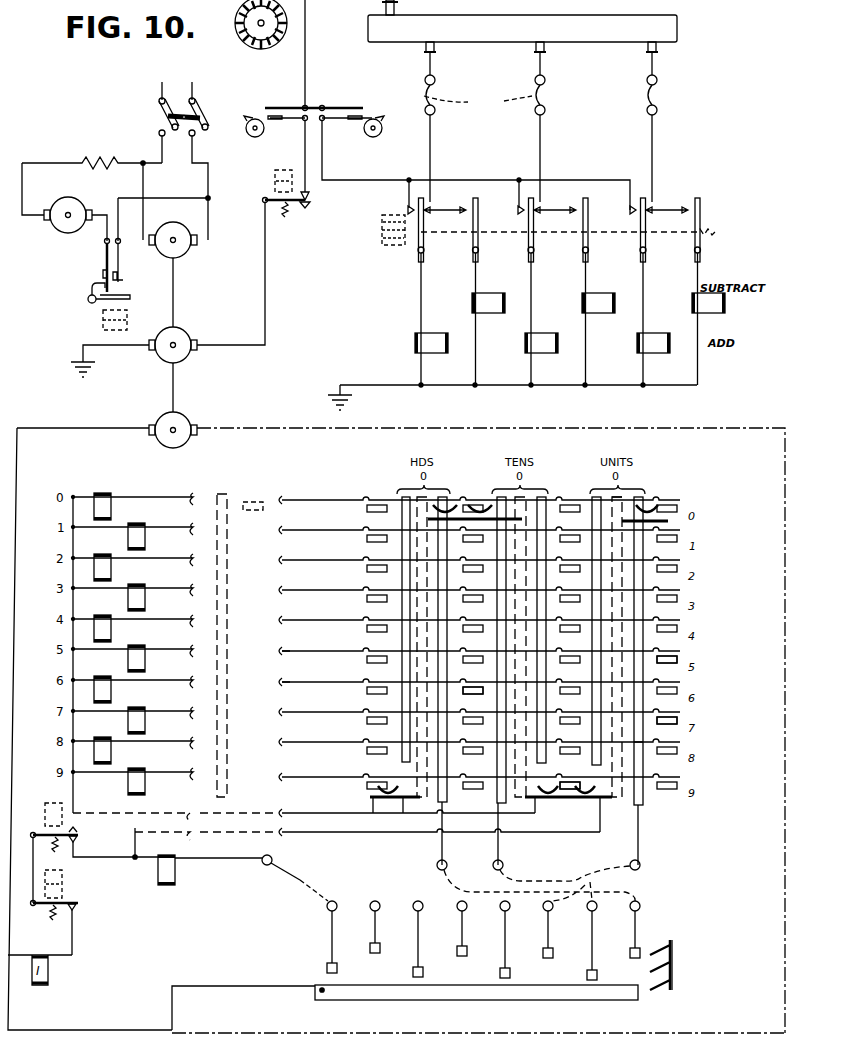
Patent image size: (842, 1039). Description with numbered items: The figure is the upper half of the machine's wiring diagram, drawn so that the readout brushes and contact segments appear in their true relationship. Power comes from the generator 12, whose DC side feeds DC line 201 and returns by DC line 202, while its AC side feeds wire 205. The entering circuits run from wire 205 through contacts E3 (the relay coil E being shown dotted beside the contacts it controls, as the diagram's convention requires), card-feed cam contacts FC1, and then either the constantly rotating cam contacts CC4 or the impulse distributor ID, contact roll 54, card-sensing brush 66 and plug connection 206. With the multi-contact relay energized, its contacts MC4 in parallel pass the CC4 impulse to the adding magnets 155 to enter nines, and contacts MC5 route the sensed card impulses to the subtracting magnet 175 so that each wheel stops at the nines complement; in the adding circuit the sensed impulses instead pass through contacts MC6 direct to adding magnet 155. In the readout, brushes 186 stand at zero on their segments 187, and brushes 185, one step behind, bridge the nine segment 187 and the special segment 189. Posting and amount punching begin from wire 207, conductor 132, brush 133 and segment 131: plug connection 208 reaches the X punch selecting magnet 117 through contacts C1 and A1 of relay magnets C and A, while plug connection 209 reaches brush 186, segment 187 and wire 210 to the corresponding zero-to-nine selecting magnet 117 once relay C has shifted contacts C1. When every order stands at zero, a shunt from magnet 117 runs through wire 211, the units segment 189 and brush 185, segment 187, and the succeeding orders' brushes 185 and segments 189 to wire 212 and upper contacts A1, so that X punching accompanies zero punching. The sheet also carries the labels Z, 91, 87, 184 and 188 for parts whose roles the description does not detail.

The impulse distributor ID is at (250, 40).
The cam contacts FC1 is at (284, 108).
The cam contacts CC4 is at (346, 108).
The contact roll 54 is at (522, 21).
The brush 66 is at (650, 50).
The plug connection 206 is at (478, 104).
The relay contacts MC4 is at (417, 195).
The relay contacts MC6 is at (428, 205).
The relay contacts MC5 is at (472, 200).
The relay E is at (273, 178).
The relay contacts E3 is at (312, 198).
The wire 205 is at (252, 274).
The motor Z is at (72, 198).
The switch 91 is at (108, 260).
The relay coil 87 is at (130, 320).
The AC side of generator AC is at (140, 352).
The generator 12 is at (158, 410).
The DC side of generator DC is at (179, 433).
The subtracting magnet 175 is at (600, 306).
The adding magnet 155 is at (535, 343).
The DC line 202 is at (28, 985).
The DC line 201 is at (785, 1018).
The punch selecting magnet 117 is at (167, 886).
The brush 186 is at (655, 508).
The commutator bar 184 is at (630, 497).
The wire 210 is at (326, 645).
The contact segment 187 is at (565, 785).
The conductor bar 188 is at (698, 742).
The brush 185 is at (590, 798).
The segment 189 is at (640, 800).
The wire 212 is at (300, 814).
The wire 211 is at (340, 832).
The relay magnet C is at (43, 811).
The relay contacts C1 is at (86, 827).
The relay magnet A is at (43, 884).
The relay contacts A1 is at (80, 906).
The plug connection 208 is at (300, 882).
The plug connection 209 is at (487, 892).
The segment 131 is at (460, 957).
The conductor 132 is at (478, 990).
The wire 207 is at (172, 1020).
The brush 133 is at (672, 955).